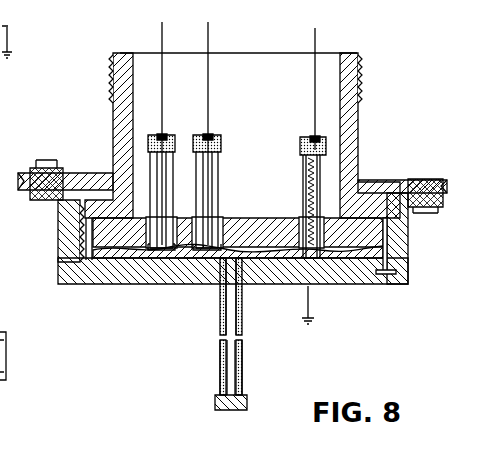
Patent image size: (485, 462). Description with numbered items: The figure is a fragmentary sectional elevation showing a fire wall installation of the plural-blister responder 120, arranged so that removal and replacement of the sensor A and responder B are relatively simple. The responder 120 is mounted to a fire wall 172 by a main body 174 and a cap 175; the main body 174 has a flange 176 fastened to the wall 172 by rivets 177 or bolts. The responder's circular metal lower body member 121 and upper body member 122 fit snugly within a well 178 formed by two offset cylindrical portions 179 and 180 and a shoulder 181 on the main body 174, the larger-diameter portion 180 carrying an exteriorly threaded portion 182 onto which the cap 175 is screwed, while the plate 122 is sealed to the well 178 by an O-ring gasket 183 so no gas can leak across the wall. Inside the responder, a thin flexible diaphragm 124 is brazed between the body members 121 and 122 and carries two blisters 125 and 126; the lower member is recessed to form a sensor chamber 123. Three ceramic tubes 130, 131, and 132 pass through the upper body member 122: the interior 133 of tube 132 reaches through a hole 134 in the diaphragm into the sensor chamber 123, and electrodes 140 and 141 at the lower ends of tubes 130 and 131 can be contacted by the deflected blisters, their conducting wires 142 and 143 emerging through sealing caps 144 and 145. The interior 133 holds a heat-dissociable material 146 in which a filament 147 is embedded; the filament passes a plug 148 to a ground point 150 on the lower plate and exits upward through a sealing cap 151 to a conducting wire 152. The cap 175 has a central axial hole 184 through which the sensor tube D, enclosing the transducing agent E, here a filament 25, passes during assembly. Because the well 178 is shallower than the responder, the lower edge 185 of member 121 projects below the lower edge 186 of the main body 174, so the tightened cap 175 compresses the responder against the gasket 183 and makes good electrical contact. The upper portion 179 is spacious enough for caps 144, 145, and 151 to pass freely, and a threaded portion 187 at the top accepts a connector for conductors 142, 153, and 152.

The filament 25 is at (242, 357).
The responder 120 is at (240, 200).
The lower body member 121 is at (370, 286).
The upper body member 122 is at (398, 240).
The sensor chamber 123 is at (306, 306).
The diaphragm 124 is at (280, 286).
The blister 125 is at (168, 281).
The blister 126 is at (183, 287).
The tube 130 is at (173, 178).
The tube 131 is at (220, 165).
The tube 132 is at (303, 172).
The interior of tube 132 133 is at (306, 214).
The hole 134 is at (322, 293).
The electrode 140 is at (183, 220).
The electrode 141 is at (232, 220).
The conducting wire 142 is at (160, 42).
The conducting wire 143 is at (210, 42).
The sealing cap 144 is at (165, 133).
The sealing cap 145 is at (212, 134).
The heat-dissociable material 146 is at (306, 187).
The filament 147 is at (306, 200).
The plug 148 is at (12, 364).
The ground point 150 is at (322, 290).
The sealing cap 151 is at (310, 138).
The conducting wire 152 is at (317, 42).
The conductor 153 is at (8, 60).
The fire wall 172 is at (395, 181).
The main body 174 is at (348, 137).
The cap 175 is at (375, 284).
The flange 176 is at (410, 180).
The rivets 177 is at (48, 168).
The well 178 is at (100, 183).
The cylindrical portion 179 is at (348, 120).
The cylindrical portion 180 is at (398, 255).
The shoulder 181 is at (372, 196).
The threaded portion 182 is at (400, 272).
The O-ring gasket 183 is at (73, 214).
The central axial hole 184 is at (243, 290).
The lower edge 185 is at (130, 286).
The lower edge 186 is at (70, 286).
The threaded portion 187 is at (360, 78).
The sensor A is at (251, 381).
The responder B is at (269, 211).
The sensor tube D is at (218, 352).
The transducing agent E is at (218, 368).